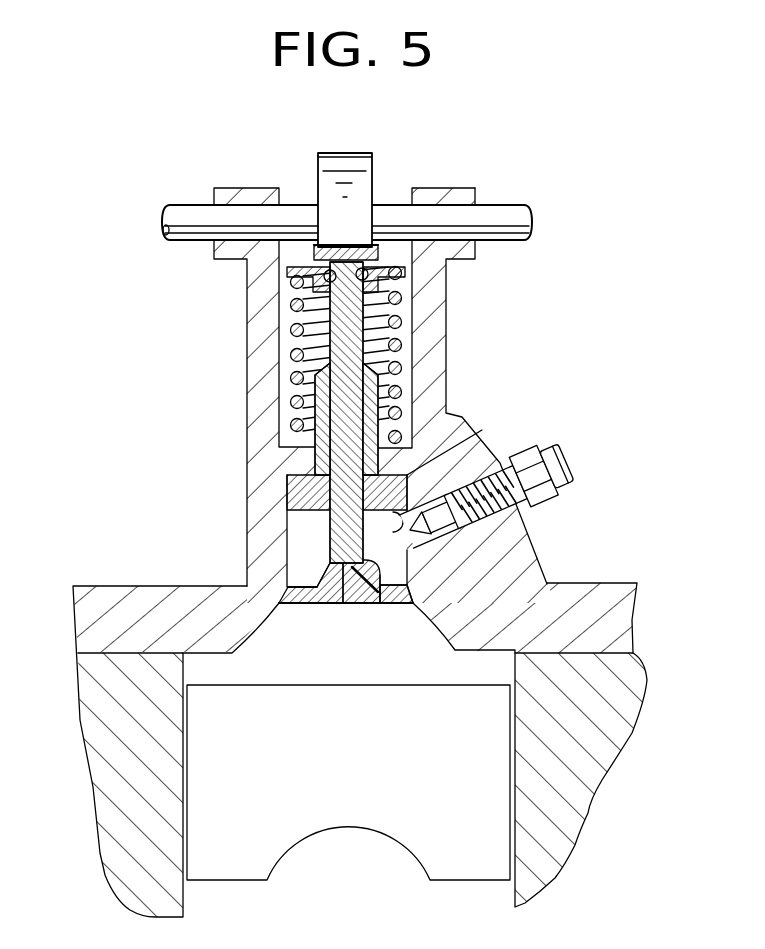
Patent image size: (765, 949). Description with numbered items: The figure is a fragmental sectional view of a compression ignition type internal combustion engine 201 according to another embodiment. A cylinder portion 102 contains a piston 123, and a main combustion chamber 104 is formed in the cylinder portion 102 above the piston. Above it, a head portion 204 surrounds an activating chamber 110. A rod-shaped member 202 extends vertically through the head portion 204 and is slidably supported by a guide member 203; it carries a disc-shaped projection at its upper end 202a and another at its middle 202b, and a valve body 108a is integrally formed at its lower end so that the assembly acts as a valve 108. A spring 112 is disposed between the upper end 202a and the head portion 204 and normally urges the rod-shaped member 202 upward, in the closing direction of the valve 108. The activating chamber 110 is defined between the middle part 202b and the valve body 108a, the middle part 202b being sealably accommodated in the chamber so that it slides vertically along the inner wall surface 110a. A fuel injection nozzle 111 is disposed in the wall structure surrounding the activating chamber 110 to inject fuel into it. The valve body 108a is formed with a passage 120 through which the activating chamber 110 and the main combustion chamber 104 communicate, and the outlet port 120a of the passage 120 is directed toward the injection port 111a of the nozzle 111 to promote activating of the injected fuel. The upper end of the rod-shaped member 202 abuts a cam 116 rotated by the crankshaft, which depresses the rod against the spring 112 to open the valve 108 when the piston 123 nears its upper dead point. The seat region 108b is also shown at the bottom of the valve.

The cylinder portion 102 is at (93, 757).
The main combustion chamber 104 is at (300, 645).
The valve 108 is at (398, 608).
The valve body 108a is at (312, 607).
The seat passage 108b is at (418, 608).
The activating chamber 110 is at (390, 568).
The inner wall surface of the activating chamber 110a is at (292, 560).
The fuel injection nozzle 111 is at (490, 485).
The injection port 111a is at (481, 438).
The spring 112 is at (402, 347).
The cam 116 is at (345, 165).
The passage 120 is at (347, 604).
The outlet port 120a is at (378, 608).
The piston 123 is at (498, 777).
The internal combustion engine 201 is at (247, 186).
The rod-shaped member 202 is at (333, 321).
The upper end of the rod-shaped member 202a is at (402, 270).
The middle part of the rod-shaped member 202b is at (298, 497).
The guide member 203 is at (322, 392).
The head portion 204 is at (262, 465).